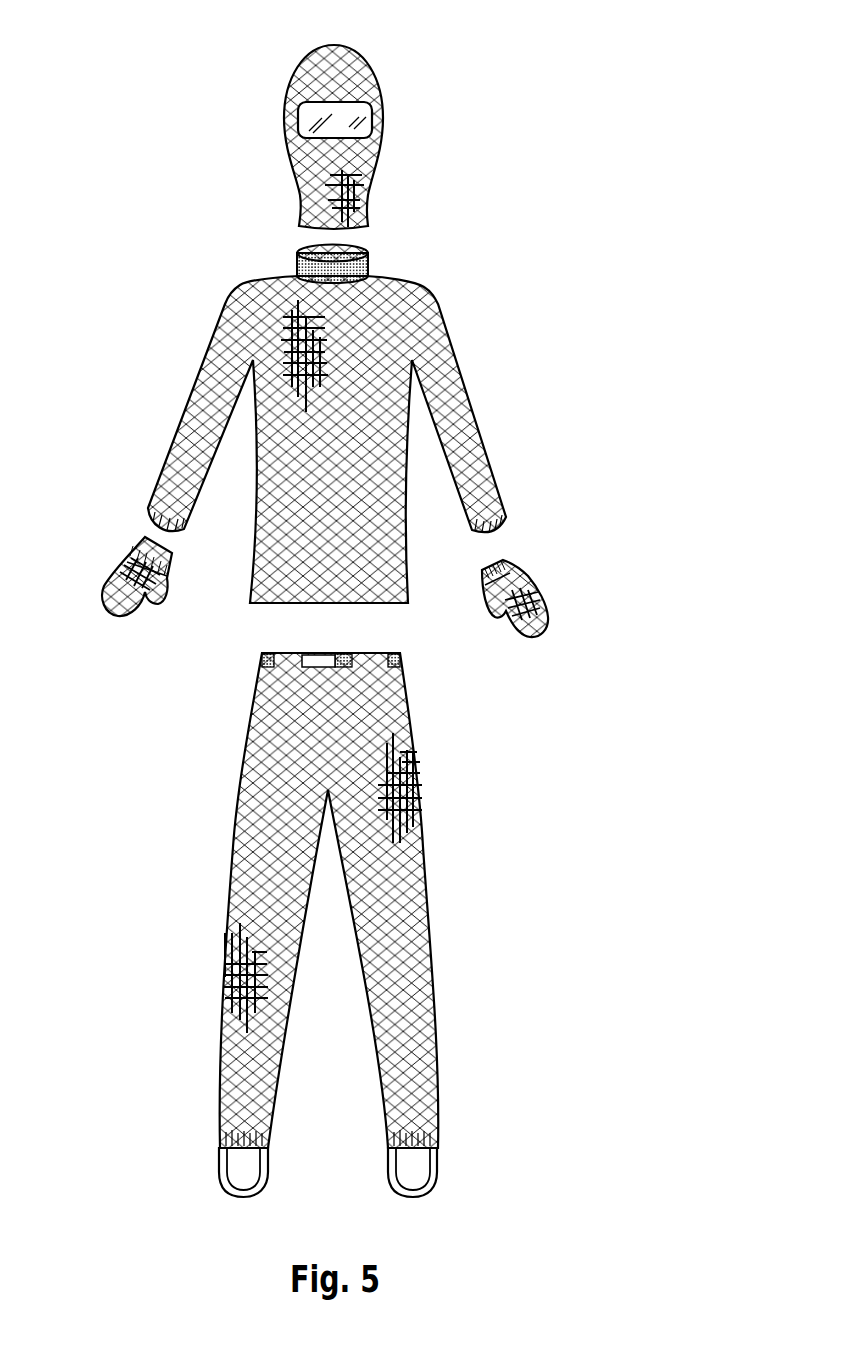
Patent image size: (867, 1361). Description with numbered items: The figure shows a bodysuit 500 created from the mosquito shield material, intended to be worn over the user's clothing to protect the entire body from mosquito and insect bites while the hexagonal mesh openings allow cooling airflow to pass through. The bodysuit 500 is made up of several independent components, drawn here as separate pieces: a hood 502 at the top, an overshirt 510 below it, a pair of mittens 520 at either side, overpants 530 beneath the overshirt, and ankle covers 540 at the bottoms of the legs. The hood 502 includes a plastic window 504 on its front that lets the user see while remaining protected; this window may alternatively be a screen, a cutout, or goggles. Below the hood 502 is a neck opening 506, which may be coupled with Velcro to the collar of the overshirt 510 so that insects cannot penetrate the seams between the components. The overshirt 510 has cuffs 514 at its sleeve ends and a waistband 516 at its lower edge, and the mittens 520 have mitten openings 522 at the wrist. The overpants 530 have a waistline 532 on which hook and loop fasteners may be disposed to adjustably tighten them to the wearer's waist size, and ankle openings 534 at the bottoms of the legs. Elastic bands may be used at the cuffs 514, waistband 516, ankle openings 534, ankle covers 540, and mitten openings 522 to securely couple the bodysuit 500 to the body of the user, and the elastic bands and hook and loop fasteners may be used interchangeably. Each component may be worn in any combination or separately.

The bodysuit 500 is at (586, 282).
The hood 502 is at (386, 58).
The plastic window 504 is at (292, 108).
The neck opening 506 is at (362, 231).
The overshirt 510 is at (368, 454).
The cuffs 514 is at (124, 507).
The waistband 516 is at (396, 606).
The mittens 520 is at (550, 583).
The mitten openings 522 is at (476, 565).
The overpants 530 is at (250, 766).
The waistline 532 is at (366, 648).
The ankle openings 534 is at (418, 1154).
The ankle covers 540 is at (210, 1168).